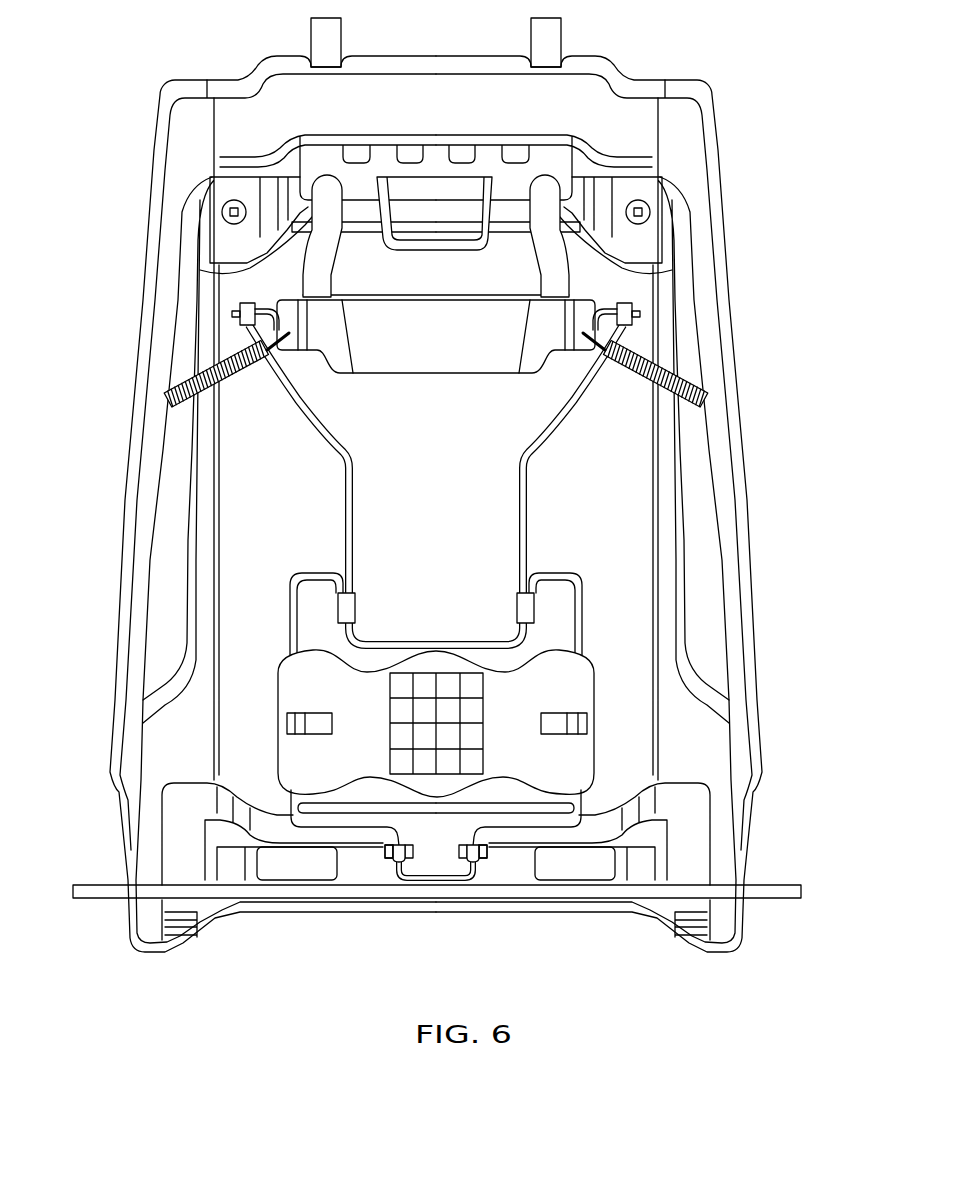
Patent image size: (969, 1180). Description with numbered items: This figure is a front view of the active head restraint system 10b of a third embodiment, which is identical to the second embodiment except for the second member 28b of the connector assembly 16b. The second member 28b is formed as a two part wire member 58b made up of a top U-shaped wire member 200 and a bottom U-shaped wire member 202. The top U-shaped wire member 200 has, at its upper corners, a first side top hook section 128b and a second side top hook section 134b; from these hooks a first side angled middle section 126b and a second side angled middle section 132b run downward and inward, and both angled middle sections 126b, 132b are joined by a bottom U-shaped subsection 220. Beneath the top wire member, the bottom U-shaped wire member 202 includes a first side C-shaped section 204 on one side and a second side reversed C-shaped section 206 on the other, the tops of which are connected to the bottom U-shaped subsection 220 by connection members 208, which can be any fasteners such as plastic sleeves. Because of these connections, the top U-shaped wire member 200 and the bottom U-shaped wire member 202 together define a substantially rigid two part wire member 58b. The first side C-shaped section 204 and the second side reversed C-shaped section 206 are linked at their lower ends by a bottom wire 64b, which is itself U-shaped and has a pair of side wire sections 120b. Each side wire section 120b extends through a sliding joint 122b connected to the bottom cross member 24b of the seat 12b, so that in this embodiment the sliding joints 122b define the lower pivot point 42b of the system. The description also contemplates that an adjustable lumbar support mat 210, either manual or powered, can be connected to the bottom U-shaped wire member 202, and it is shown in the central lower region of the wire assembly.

The active head restraint system 10b is at (131, 133).
The seat 12b is at (157, 80).
The connector assembly 16b is at (558, 432).
The bottom cross member 24b is at (647, 857).
The second member 28b is at (339, 521).
The lower pivot point 42b is at (500, 850).
The two part wire member 58b is at (301, 421).
The bottom wire 64b is at (447, 880).
The side wire sections 120b is at (400, 863).
The sliding joints 122b is at (386, 848).
The first side angled middle section 126b is at (315, 420).
The first side top hook section 128b is at (243, 302).
The second side angled middle section 132b is at (537, 437).
The second side top hook section 134b is at (629, 302).
The top U-shaped wire member 200 is at (339, 443).
The bottom U-shaped wire member 202 is at (558, 571).
The first side C-shaped section 204 is at (290, 617).
The second side reversed C-shaped section 206 is at (582, 612).
The connection members 208 is at (523, 603).
The adjustable lumbar support mat 210 is at (587, 687).
The bottom U-shaped subsection 220 is at (353, 530).